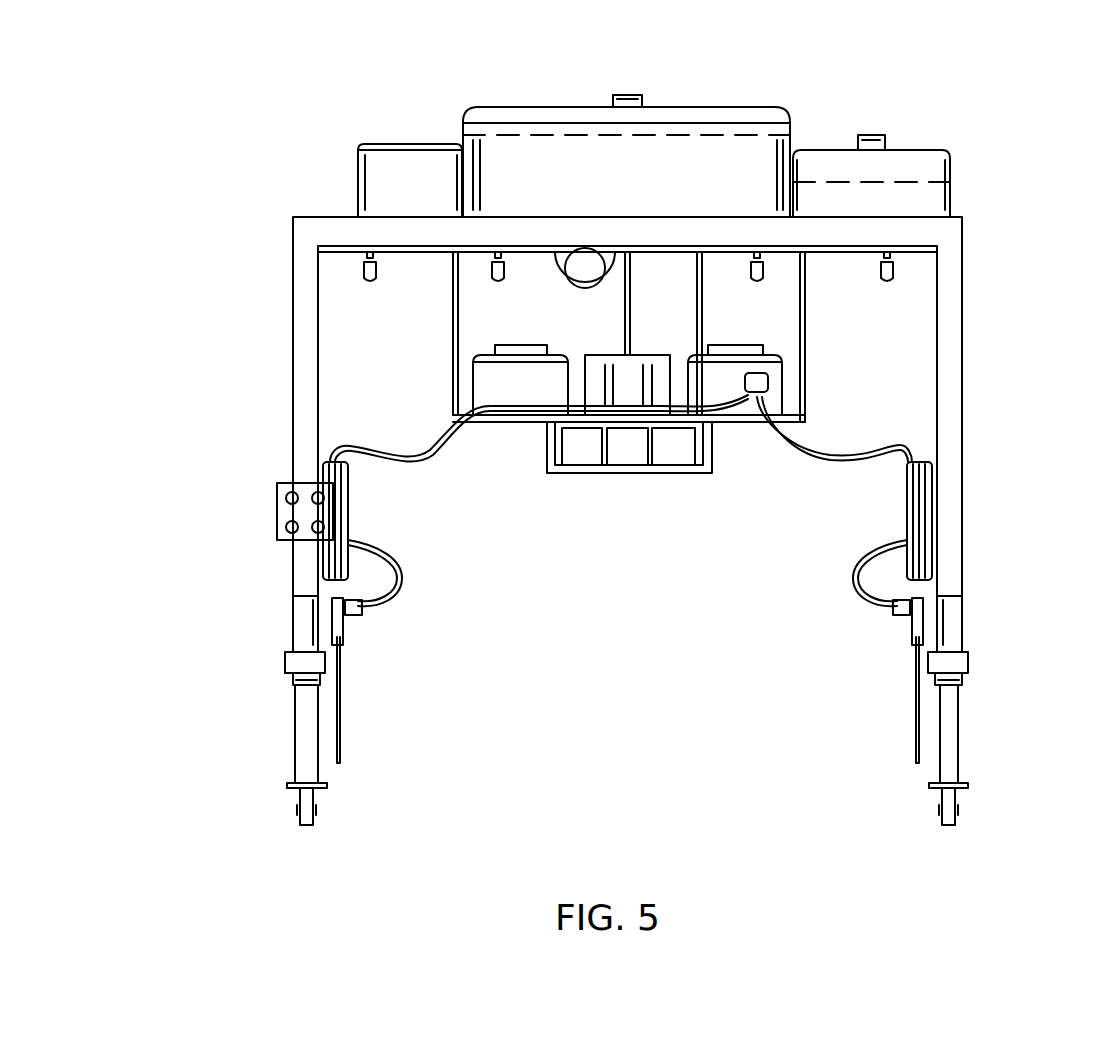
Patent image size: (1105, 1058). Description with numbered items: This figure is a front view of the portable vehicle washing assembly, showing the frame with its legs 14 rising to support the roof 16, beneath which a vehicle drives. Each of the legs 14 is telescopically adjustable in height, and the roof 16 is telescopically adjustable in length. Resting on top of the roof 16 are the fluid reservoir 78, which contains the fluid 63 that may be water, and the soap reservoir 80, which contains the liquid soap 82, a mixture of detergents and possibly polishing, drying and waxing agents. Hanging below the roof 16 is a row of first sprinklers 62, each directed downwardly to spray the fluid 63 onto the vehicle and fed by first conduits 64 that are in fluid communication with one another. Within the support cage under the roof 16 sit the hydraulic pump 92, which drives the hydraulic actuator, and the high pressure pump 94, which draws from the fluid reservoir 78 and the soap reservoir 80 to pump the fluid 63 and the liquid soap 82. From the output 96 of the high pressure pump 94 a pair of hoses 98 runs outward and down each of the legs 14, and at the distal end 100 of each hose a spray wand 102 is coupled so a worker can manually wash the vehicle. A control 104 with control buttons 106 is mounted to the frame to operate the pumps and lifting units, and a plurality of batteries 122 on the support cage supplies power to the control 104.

The legs 14 is at (290, 392).
The roof 16 is at (323, 217).
The first sprinklers 62 is at (893, 285).
The fluid 63 is at (572, 135).
The first conduits 64 is at (840, 253).
The fluid reservoir 78 is at (718, 107).
The soap reservoir 80 is at (900, 152).
The liquid soap 82 is at (835, 180).
The hydraulic pump 92 is at (490, 382).
The high pressure pump 94 is at (740, 365).
The output 96 is at (757, 398).
The hoses 98 is at (415, 460).
The distal end 100 is at (400, 608).
The spray wands 102 is at (340, 715).
The control 104 is at (290, 495).
The control buttons 106 is at (292, 527).
The batteries 122 is at (577, 455).